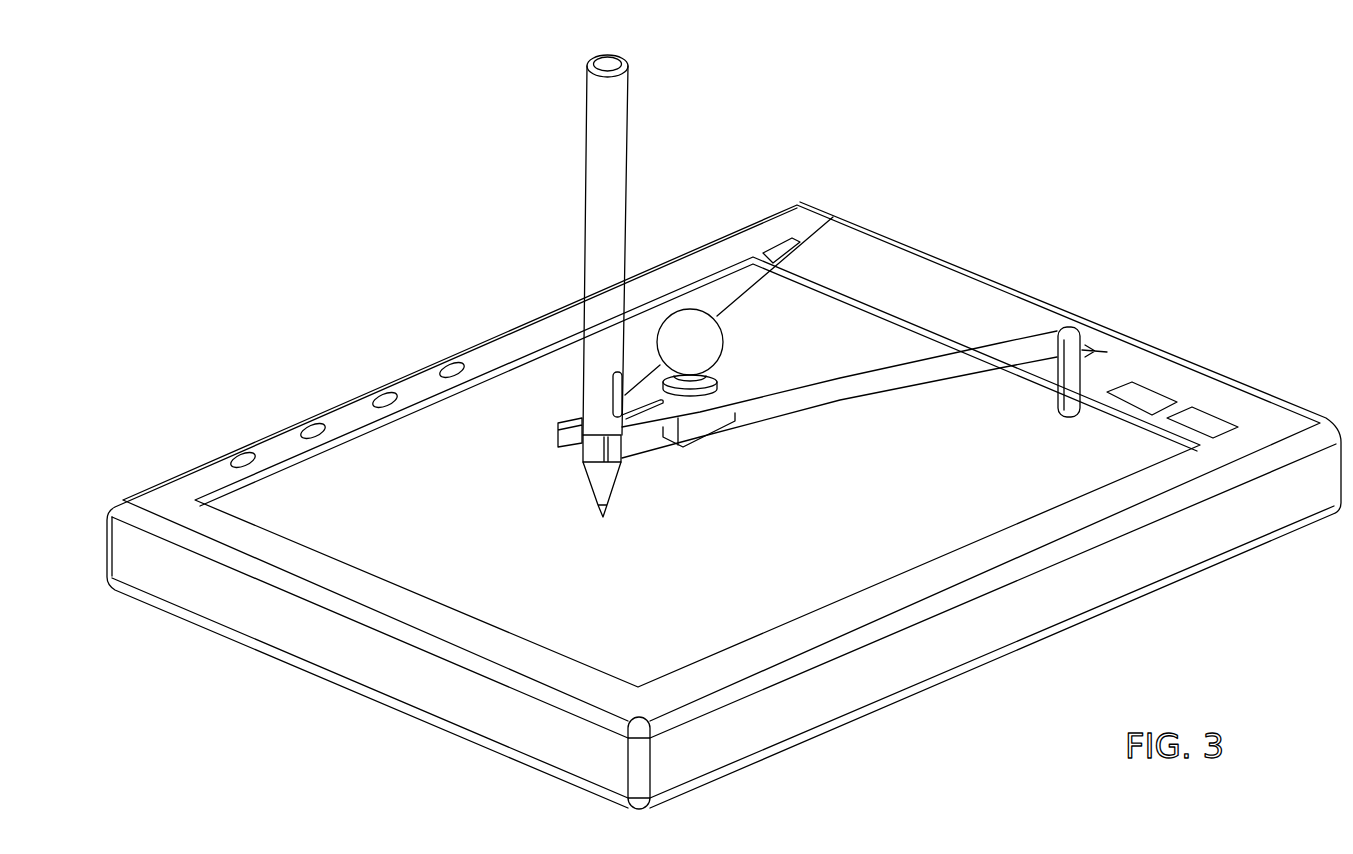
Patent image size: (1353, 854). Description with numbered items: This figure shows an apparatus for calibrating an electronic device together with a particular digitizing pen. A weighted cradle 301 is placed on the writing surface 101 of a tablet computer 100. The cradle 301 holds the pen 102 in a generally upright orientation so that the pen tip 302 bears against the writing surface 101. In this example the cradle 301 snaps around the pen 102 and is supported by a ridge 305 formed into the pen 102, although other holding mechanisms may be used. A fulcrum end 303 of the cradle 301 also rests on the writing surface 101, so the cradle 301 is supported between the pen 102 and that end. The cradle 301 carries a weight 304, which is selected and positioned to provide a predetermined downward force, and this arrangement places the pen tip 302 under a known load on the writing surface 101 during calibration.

The tablet computer 100 is at (440, 300).
The writing surface 101 is at (380, 450).
The pen 102 is at (618, 128).
The weighted cradle 301 is at (930, 282).
The pen tip 302 is at (605, 513).
The fulcrum end 303 is at (1072, 417).
The weight 304 is at (702, 443).
The ridge 305 is at (582, 445).